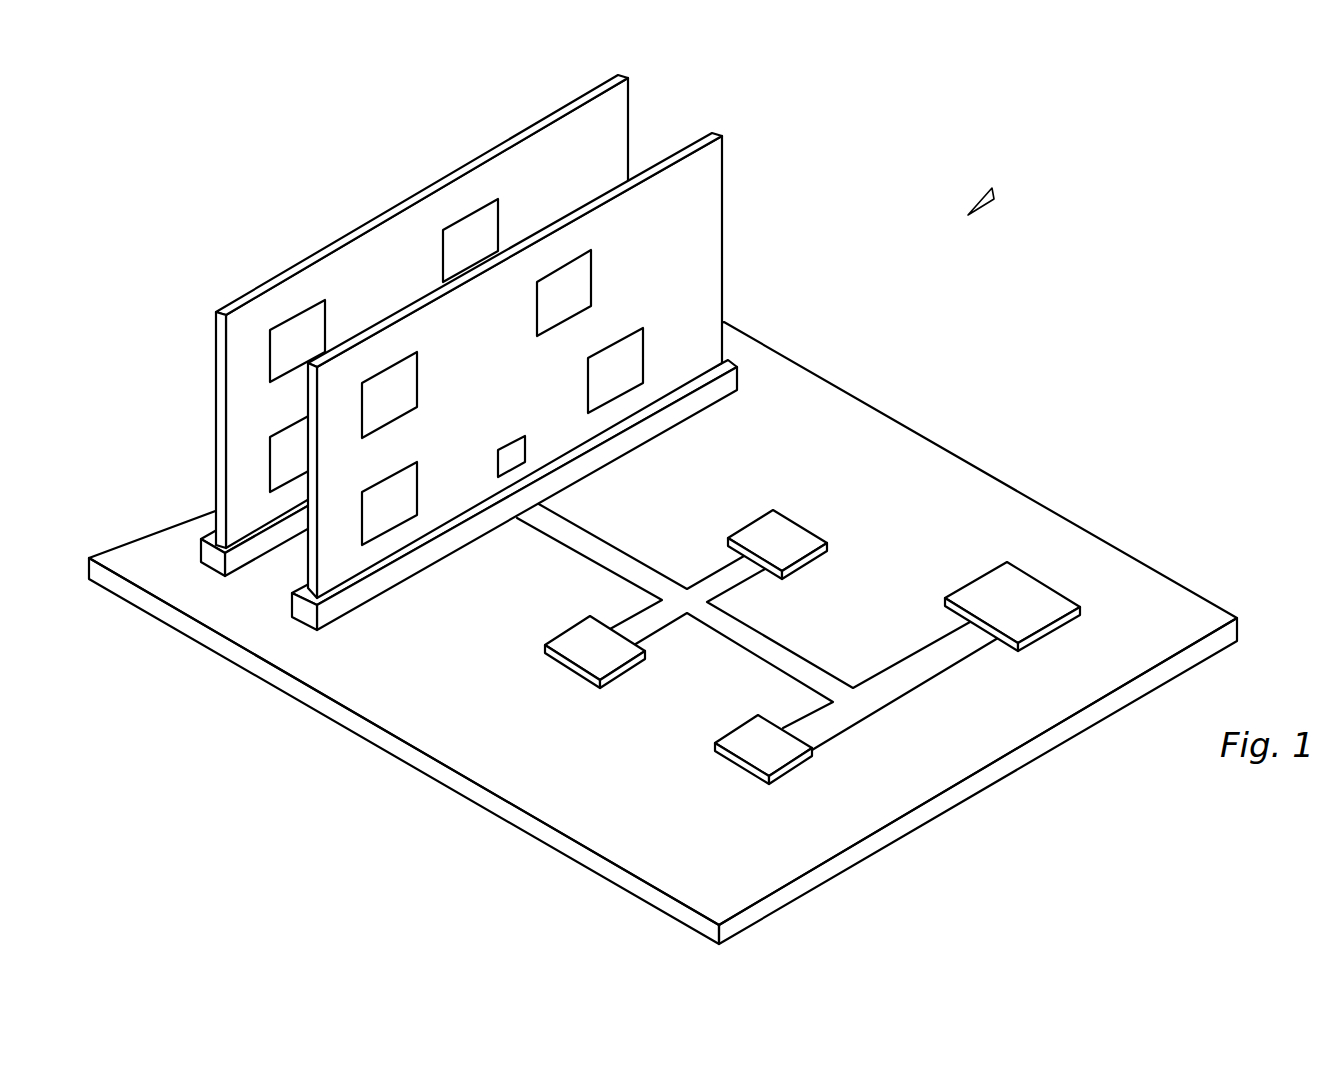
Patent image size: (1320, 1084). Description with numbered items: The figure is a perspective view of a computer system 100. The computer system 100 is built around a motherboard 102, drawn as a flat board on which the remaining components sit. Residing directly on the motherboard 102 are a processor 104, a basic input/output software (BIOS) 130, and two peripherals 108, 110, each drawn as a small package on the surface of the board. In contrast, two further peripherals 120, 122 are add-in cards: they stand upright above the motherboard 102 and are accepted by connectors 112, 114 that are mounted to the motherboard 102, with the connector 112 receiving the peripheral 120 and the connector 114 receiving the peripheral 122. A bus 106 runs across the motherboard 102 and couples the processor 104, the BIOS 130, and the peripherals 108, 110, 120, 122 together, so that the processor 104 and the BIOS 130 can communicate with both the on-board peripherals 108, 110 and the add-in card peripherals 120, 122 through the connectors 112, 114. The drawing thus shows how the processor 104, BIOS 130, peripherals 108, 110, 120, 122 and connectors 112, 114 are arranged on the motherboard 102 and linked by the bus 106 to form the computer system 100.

The computer system 100 is at (993, 194).
The motherboard 102 is at (1127, 563).
The processor 104 is at (1025, 583).
The bus 106 is at (915, 663).
The peripheral 108 is at (793, 532).
The peripheral 110 is at (578, 633).
The connector 112 is at (357, 597).
The connector 114 is at (240, 557).
The peripheral 120 is at (725, 137).
The peripheral 122 is at (630, 80).
The basic input/output software (BIOS) 130 is at (745, 732).